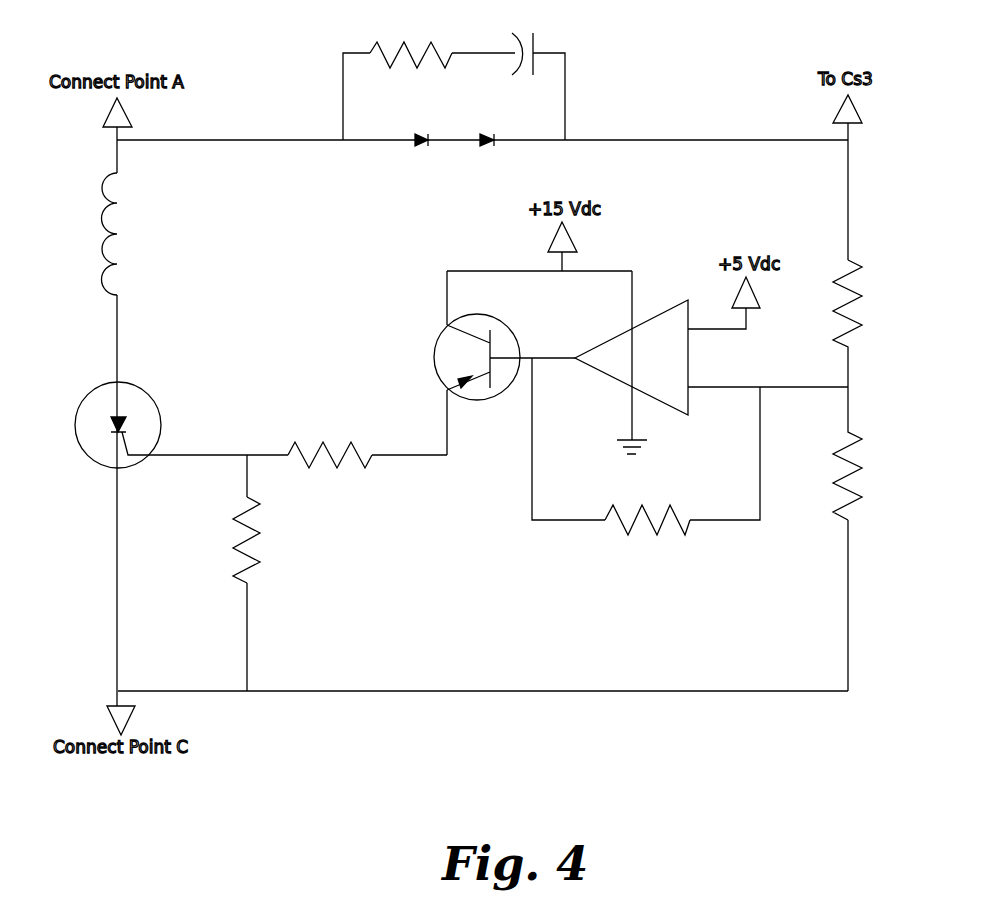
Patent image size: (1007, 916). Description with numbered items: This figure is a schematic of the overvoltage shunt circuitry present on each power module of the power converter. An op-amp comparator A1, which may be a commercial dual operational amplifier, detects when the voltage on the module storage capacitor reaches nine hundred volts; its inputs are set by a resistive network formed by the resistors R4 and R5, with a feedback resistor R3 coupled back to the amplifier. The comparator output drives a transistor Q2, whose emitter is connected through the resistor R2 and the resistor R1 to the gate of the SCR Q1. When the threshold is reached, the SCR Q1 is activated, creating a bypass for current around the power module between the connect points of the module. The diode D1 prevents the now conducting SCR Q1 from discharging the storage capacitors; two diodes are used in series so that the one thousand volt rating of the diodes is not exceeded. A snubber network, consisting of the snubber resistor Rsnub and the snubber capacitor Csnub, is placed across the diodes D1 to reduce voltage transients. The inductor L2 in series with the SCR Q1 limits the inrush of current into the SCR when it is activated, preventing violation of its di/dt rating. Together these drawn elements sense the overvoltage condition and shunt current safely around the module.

The inductor L2 is at (136, 234).
The SCR Q1 is at (163, 407).
The transistor 2N3904 Q2 is at (443, 357).
The resistor 51 ohm R1 is at (245, 540).
The resistor 200 ohm R2 is at (330, 462).
The resistor 1M ohm feedback R3 is at (647, 522).
The resistor 1M ohm R4 is at (870, 323).
The resistor 5.5K ohm R5 is at (875, 453).
The operational amplifier LM358 A1 is at (629, 357).
The diode D1 is at (453, 107).
The snubber resistor 51 ohm Rsnub is at (411, 42).
The snubber capacitor 10 nF Csnub is at (523, 42).